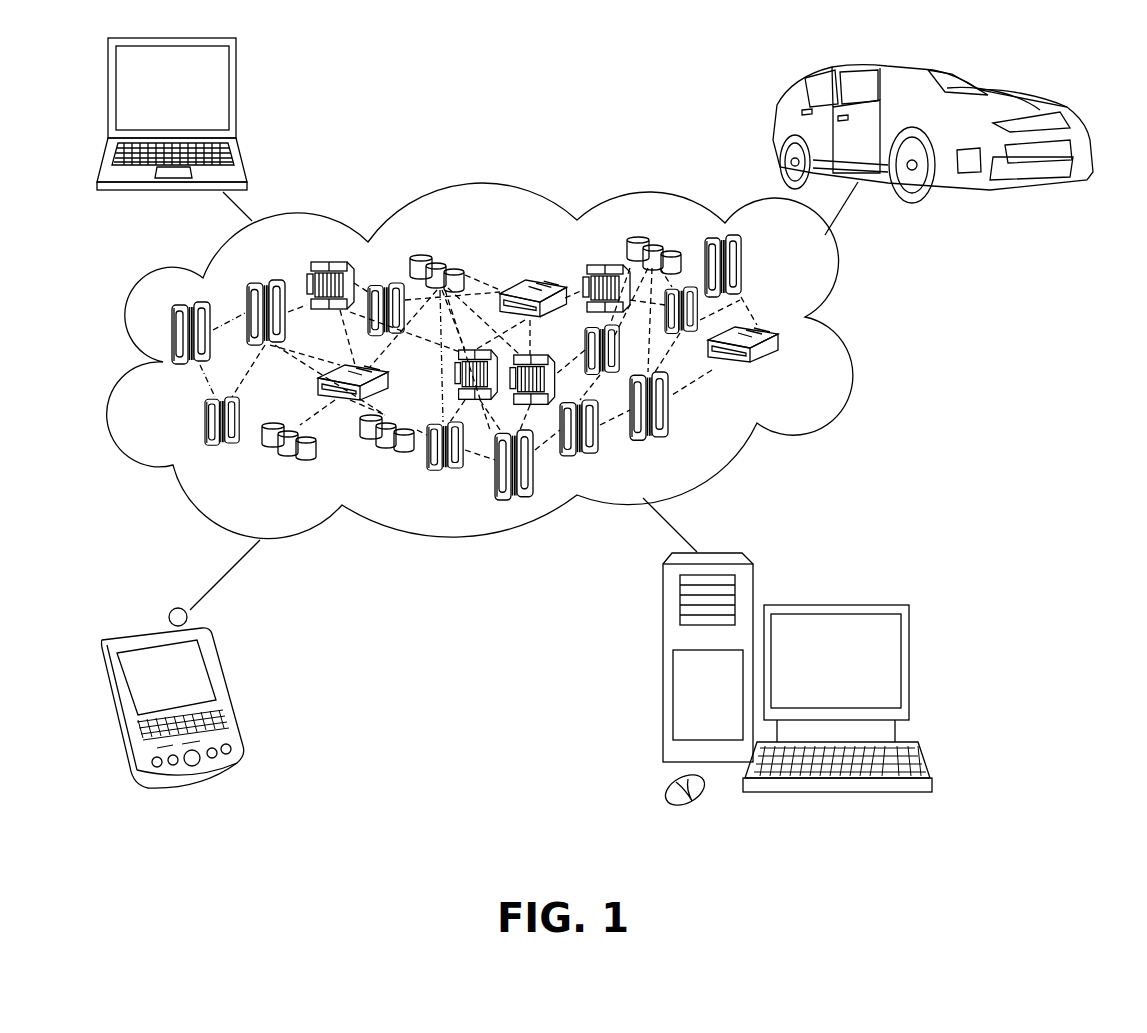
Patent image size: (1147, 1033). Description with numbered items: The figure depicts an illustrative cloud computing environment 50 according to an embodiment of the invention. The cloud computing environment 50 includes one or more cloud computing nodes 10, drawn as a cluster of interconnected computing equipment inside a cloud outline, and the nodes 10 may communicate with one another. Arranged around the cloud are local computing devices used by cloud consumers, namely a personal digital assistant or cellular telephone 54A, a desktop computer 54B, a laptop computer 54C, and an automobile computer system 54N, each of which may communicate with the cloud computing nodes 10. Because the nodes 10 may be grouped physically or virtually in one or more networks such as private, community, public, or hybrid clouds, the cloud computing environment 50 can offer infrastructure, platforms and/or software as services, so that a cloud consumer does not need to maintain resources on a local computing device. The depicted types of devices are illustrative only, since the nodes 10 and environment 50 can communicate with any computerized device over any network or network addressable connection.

The cloud computing nodes 10 is at (787, 382).
The cloud computing environment 50 is at (853, 352).
The personal digital assistant (PDA) or cellular telephone 54A is at (225, 685).
The desktop computer 54B is at (868, 605).
The laptop computer 54C is at (238, 106).
The automobile computer system 54N is at (1000, 90).